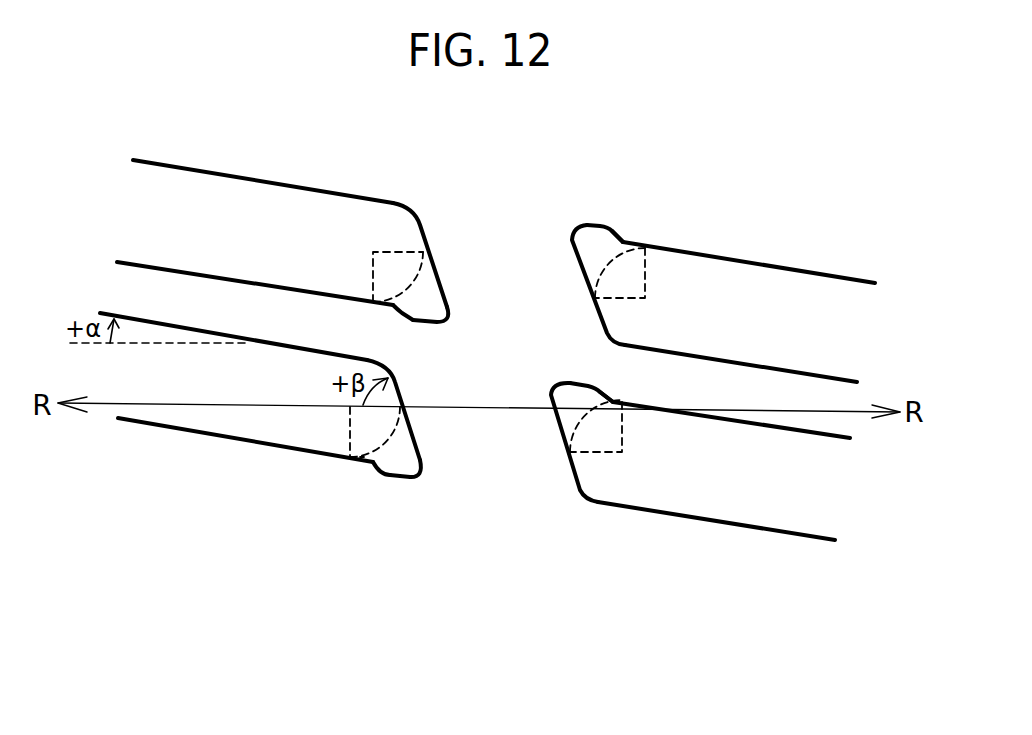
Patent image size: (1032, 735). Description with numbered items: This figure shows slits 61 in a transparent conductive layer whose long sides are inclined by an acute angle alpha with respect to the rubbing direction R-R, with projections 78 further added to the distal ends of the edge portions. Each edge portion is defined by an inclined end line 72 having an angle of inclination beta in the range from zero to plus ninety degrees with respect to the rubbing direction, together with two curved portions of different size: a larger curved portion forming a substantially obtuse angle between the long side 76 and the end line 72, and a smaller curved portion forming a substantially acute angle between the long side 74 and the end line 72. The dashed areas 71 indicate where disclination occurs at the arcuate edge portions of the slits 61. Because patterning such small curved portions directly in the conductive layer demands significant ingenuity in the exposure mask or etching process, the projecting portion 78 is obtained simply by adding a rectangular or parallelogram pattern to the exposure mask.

The slit 61 is at (200, 198).
The long side 76 is at (337, 193).
The inclined end line 72 is at (443, 290).
The projection 78 is at (450, 310).
The long side 74 is at (393, 308).
The area (D) 71 is at (393, 275).